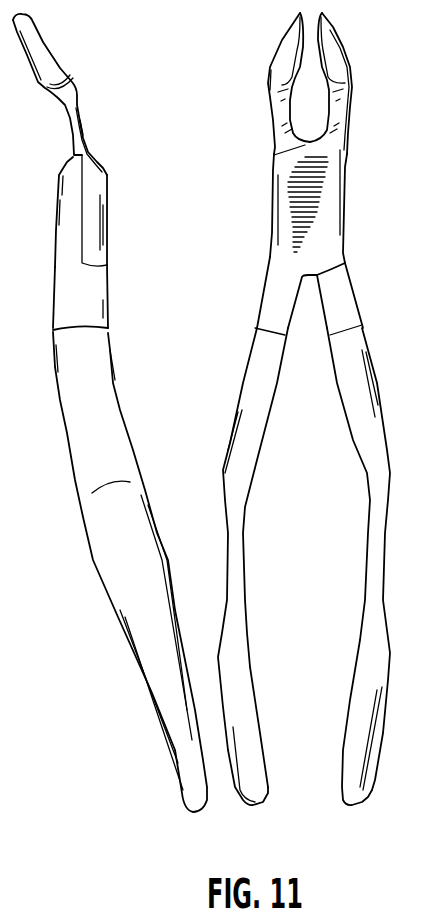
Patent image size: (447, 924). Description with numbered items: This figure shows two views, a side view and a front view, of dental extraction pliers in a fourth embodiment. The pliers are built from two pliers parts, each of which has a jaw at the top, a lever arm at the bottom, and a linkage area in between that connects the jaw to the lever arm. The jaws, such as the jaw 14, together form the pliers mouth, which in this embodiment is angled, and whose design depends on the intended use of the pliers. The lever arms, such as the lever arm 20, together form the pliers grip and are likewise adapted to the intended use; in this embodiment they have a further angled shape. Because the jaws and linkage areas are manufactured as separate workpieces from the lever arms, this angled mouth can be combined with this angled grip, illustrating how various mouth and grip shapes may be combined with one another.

The jaw 14 is at (283, 65).
The lever arm 20 is at (252, 390).